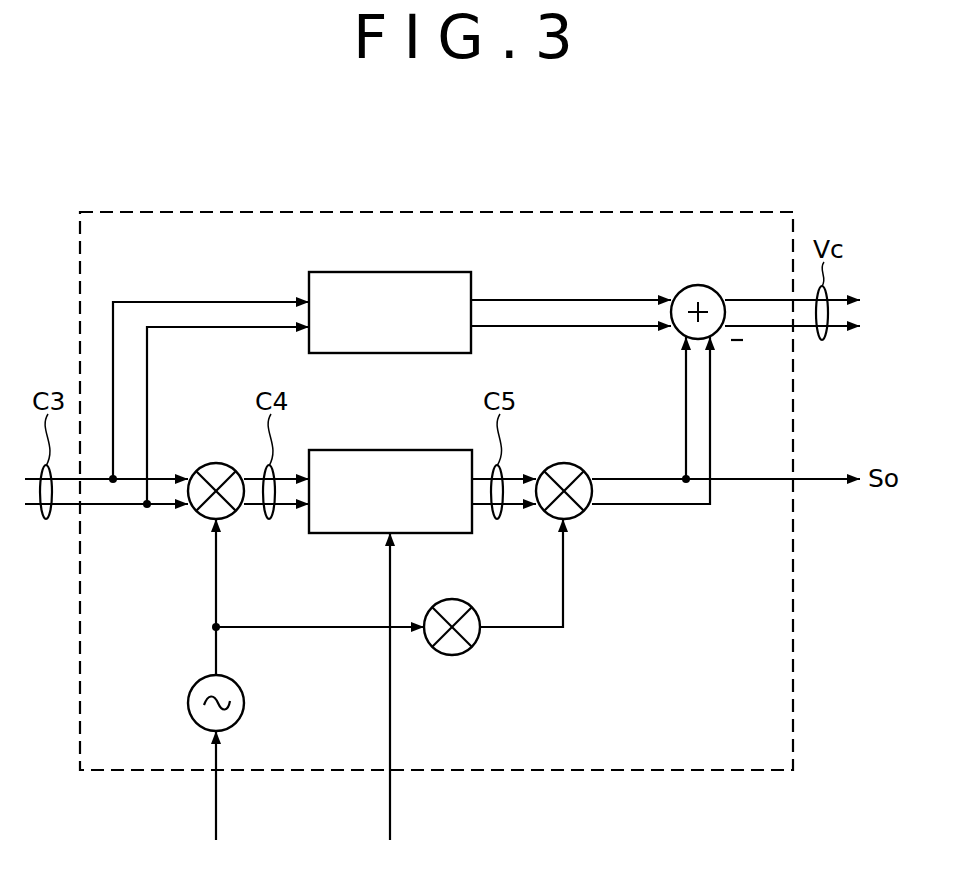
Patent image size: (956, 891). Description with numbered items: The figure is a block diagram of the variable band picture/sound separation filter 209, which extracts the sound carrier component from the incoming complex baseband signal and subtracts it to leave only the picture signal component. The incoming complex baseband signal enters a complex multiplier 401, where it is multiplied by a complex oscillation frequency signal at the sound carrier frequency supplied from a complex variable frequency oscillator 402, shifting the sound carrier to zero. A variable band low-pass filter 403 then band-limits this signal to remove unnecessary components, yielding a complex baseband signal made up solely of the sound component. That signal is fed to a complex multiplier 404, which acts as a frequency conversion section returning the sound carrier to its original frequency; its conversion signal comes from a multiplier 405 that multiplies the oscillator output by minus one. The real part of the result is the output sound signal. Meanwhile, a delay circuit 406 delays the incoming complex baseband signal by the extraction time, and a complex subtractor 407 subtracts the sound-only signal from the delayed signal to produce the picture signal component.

The variable band picture/sound separation filter 209 is at (176, 212).
The complex multiplier 401 is at (216, 463).
The complex variable frequency oscillator 402 is at (188, 703).
The variable band low-pass filter 403 is at (388, 450).
The complex multiplier 404 is at (564, 463).
The multiplier 405 is at (451, 599).
The delay circuit 406 is at (388, 272).
The complex subtractor 407 is at (697, 285).